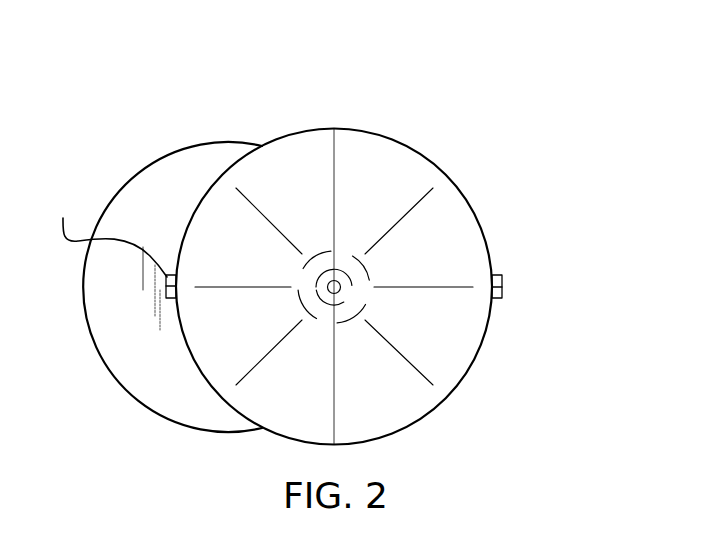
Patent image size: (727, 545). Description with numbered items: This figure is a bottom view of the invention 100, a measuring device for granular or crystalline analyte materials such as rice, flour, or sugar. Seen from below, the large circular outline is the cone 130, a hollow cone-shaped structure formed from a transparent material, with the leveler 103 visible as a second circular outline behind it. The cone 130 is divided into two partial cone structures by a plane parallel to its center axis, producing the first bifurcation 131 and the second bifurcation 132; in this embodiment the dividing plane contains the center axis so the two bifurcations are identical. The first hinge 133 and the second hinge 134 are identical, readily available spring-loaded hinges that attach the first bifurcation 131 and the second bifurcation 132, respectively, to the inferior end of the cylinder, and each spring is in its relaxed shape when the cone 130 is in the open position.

The invention 100 is at (121, 103).
The leveler 103 is at (140, 402).
The cone 130 is at (482, 227).
The first bifurcation 131 is at (450, 352).
The second bifurcation 132 is at (285, 423).
The first hinge 133 is at (502, 280).
The second hinge 134 is at (104, 258).